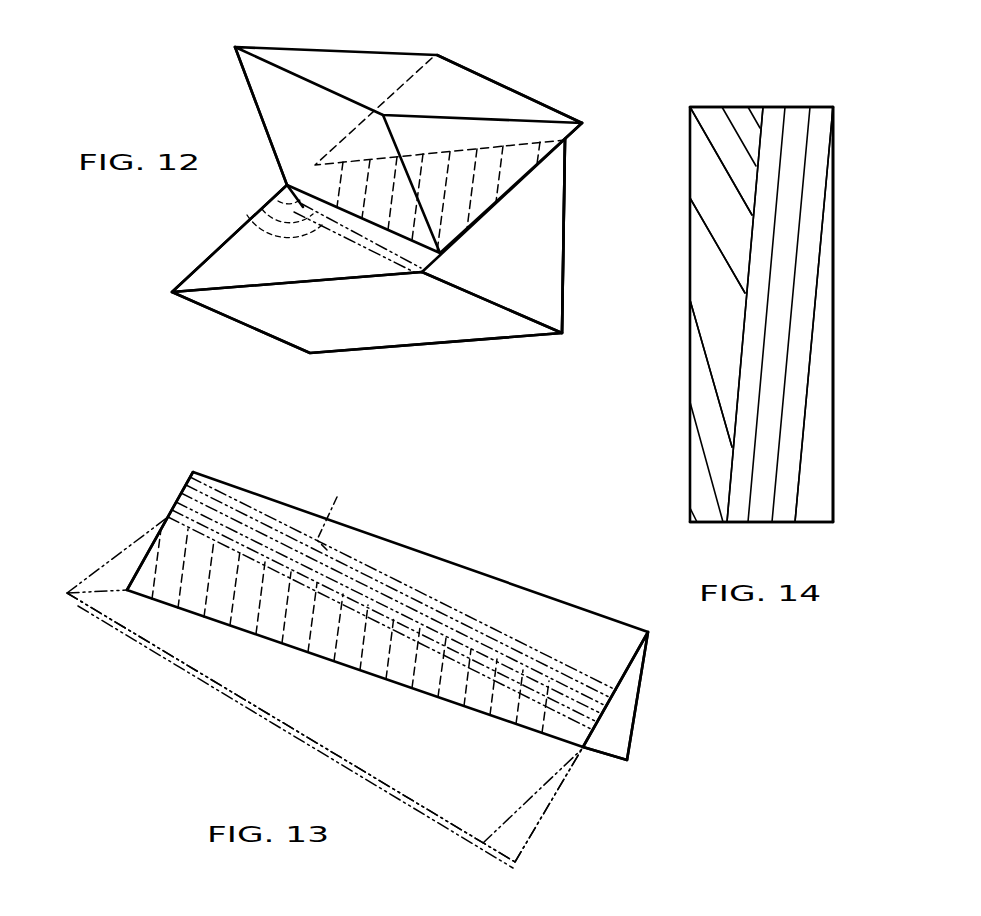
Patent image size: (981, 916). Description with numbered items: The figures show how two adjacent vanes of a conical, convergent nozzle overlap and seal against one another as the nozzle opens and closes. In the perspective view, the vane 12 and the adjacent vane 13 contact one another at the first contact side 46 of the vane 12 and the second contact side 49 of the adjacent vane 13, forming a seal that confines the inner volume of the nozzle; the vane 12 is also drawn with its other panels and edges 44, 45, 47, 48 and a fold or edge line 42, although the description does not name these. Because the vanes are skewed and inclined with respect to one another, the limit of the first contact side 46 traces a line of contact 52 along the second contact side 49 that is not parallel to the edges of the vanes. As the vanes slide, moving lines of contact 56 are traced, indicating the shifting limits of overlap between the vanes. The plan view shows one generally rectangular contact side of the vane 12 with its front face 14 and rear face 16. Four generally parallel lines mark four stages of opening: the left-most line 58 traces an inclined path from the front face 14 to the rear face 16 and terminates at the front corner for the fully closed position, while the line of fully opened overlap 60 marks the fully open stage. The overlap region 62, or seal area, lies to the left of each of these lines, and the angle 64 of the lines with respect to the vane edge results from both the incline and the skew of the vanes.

In FIG. 12, the vane 12 is at (370, 47).
In FIG. 13, the vane 12 is at (482, 846).
In FIG. 14, the vane 12 is at (848, 97).
In FIG. 12, the adjacent vane 13 is at (543, 337).
In FIG. 13, the adjacent vane 13 is at (623, 760).
In FIG. 14, the front face 14 is at (737, 106).
In FIG. 14, the rear face 16 is at (815, 525).
In FIG. 12, the fold line 42 is at (490, 200).
In FIG. 13, the fold line 42 is at (142, 560).
In FIG. 12, the first panel 44 is at (273, 97).
In FIG. 12, the bottom panel 45 is at (388, 337).
In FIG. 12, the first contact side 46 is at (575, 135).
In FIG. 13, the first contact side 46 is at (547, 805).
In FIG. 12, the side edge 47 is at (562, 305).
In FIG. 13, the side edge 47 is at (638, 708).
In FIG. 12, the top panel 48 is at (488, 90).
In FIG. 12, the second contact side 49 is at (228, 260).
In FIG. 13, the second contact side 49 is at (623, 647).
In FIG. 12, the line of contact 52 is at (325, 198).
In FIG. 13, the line of contact 52 is at (376, 598).
In FIG. 12, the moving lines of contact 56 is at (250, 212).
In FIG. 13, the moving lines of contact 56 is at (340, 520).
In FIG. 14, the left-most line 58 is at (758, 168).
In FIG. 14, the line of fully opened overlap 60 is at (818, 297).
In FIG. 14, the overlap region 62 is at (700, 473).
In FIG. 14, the angle 64 is at (753, 412).